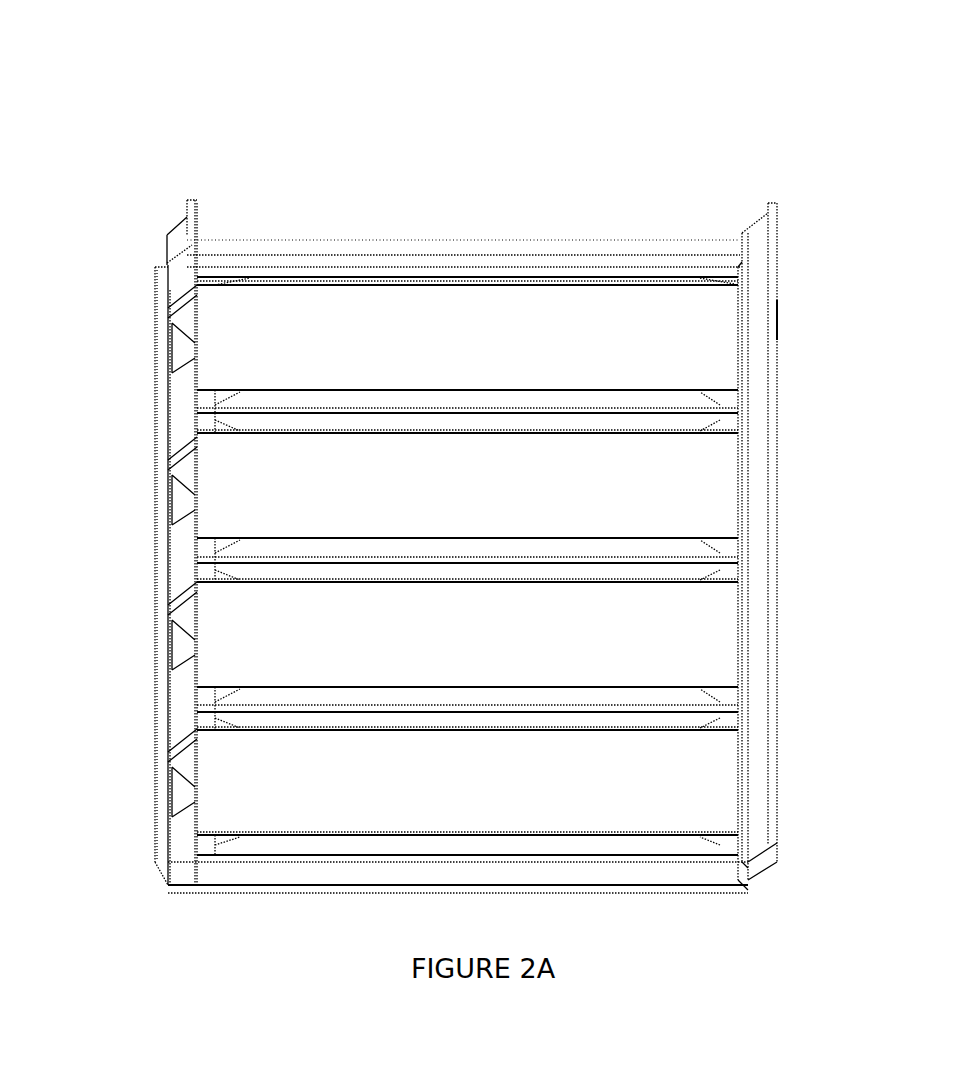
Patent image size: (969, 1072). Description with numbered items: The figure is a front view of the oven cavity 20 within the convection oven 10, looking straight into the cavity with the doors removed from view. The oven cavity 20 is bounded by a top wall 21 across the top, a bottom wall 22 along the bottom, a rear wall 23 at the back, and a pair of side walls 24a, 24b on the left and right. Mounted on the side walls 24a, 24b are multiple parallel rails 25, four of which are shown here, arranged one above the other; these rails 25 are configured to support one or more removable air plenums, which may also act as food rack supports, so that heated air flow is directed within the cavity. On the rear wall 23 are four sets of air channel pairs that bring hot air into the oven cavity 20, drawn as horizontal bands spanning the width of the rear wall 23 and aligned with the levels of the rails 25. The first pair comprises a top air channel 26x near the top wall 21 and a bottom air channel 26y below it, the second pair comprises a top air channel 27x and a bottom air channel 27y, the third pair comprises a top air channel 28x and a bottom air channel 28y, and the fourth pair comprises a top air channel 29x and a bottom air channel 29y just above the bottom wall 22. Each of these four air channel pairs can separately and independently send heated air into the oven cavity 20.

The convection oven 10 is at (468, 212).
The oven cavity 20 is at (473, 478).
The top wall 21 is at (624, 268).
The bottom wall 22 is at (437, 867).
The rear wall 23 is at (300, 338).
The side wall 24a is at (207, 465).
The side wall 24b is at (722, 623).
The rails 25 is at (172, 293).
The top air channel 26x is at (527, 266).
The bottom air channel 26y is at (536, 382).
The top air channel 27x is at (717, 427).
The bottom air channel 27y is at (718, 533).
The top air channel 28x is at (719, 570).
The bottom air channel 28y is at (720, 678).
The top air channel 29x is at (716, 725).
The bottom air channel 29y is at (718, 826).